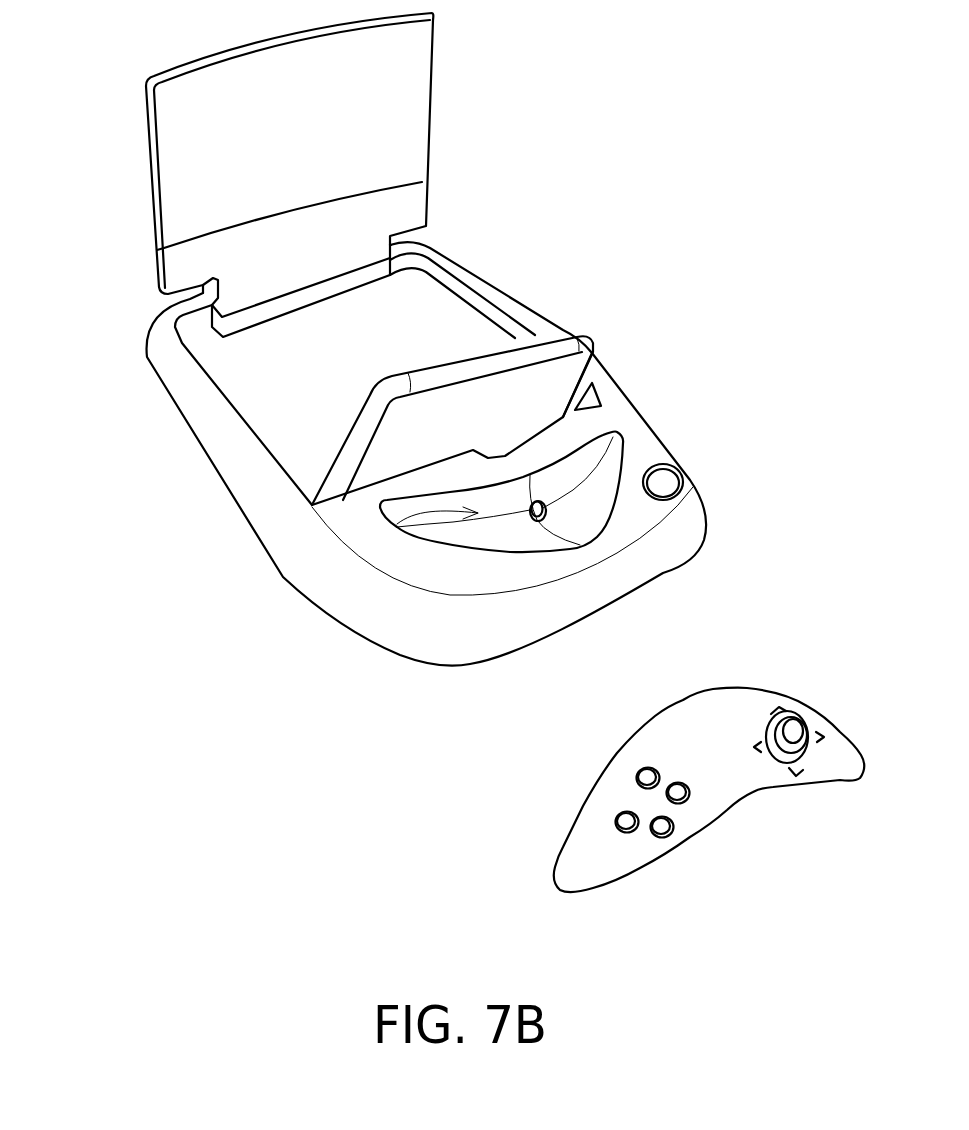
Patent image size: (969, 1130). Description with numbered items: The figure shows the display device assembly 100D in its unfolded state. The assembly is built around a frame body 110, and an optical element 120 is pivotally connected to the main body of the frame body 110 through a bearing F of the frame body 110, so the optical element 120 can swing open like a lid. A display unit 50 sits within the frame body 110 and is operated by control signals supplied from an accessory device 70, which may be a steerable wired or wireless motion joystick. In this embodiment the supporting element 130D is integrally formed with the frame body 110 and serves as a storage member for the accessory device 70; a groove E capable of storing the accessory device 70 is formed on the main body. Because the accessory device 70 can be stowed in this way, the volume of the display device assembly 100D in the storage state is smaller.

The display device assembly 100D is at (718, 72).
The frame body 110 is at (187, 402).
The optical element 120 is at (413, 83).
The supporting element 130D is at (443, 565).
The display unit 50 is at (567, 372).
The accessory device 70 is at (573, 853).
The groove E is at (397, 524).
The bearing F is at (367, 273).